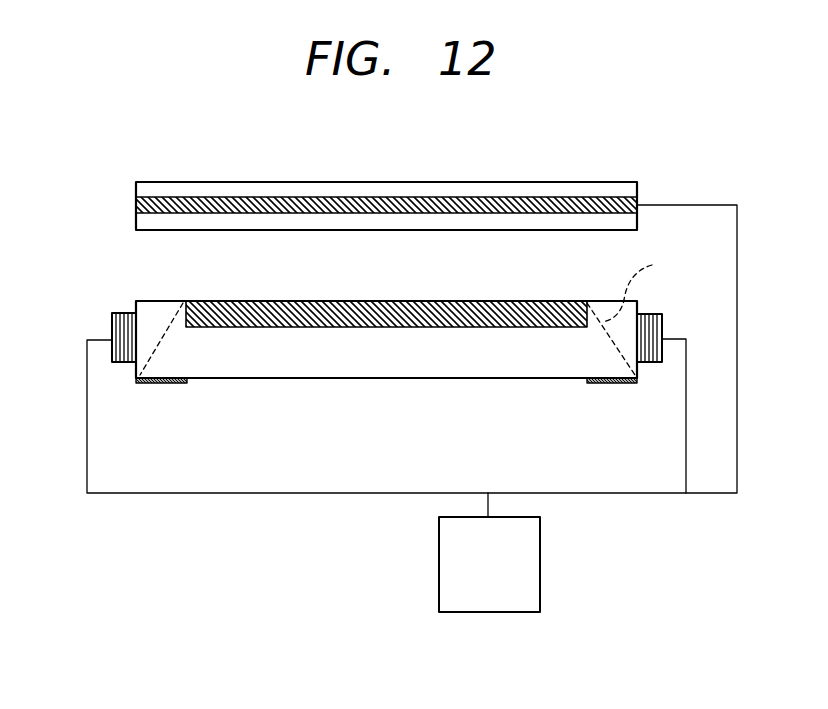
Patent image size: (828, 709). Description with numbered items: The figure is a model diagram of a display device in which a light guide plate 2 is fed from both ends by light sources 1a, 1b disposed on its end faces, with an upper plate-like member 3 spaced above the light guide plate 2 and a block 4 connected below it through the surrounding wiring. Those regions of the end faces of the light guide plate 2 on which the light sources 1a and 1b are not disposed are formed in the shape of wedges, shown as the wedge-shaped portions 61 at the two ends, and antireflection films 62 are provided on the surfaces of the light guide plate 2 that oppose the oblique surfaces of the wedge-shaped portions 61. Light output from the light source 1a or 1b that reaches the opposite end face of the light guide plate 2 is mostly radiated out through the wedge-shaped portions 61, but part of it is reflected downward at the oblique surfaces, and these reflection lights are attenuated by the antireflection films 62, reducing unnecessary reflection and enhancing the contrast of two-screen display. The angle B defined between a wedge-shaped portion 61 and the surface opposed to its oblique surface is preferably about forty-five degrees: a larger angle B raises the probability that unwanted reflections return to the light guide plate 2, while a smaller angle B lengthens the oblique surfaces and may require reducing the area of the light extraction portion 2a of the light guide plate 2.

The upper substrate / heat sink plate 3 is at (541, 188).
The light guide plate 2 is at (245, 362).
The light extraction portion 2a is at (379, 315).
The antireflection film 62 is at (610, 386).
The wedge-shaped portion 61 is at (643, 286).
The angle B is at (613, 342).
The light source 1a is at (122, 323).
The light source 1b is at (650, 327).
The power source 4 is at (468, 588).